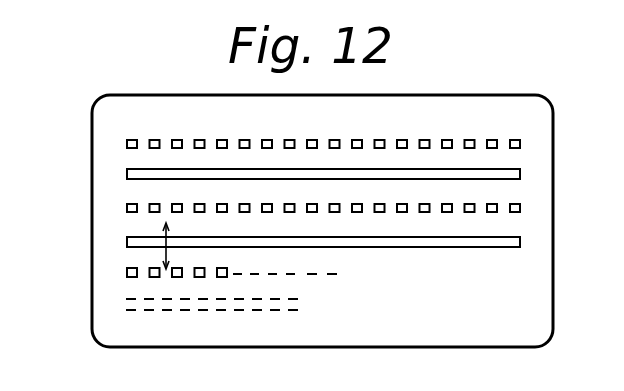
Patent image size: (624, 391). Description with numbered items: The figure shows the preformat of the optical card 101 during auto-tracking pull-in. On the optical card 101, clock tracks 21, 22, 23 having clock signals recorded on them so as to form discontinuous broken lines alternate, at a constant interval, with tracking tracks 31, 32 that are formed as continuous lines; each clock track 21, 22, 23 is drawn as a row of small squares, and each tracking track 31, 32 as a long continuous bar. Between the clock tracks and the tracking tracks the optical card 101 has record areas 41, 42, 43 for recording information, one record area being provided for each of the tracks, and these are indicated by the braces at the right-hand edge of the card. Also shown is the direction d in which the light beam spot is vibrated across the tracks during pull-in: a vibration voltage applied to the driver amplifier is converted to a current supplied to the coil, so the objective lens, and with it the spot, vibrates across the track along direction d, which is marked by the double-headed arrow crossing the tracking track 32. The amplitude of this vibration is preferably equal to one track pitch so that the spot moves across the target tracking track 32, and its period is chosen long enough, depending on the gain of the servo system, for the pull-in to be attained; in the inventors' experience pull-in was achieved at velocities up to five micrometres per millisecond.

The clock track 21 is at (118, 132).
The tracking track 31 is at (118, 165).
The clock track 22 is at (118, 196).
The tracking track 32 is at (118, 231).
The clock track 23 is at (118, 264).
The record area 41 is at (527, 147).
The record area 42 is at (527, 187).
The record area 43 is at (527, 222).
The direction of vibration d is at (168, 240).
The optical card 101 is at (520, 340).